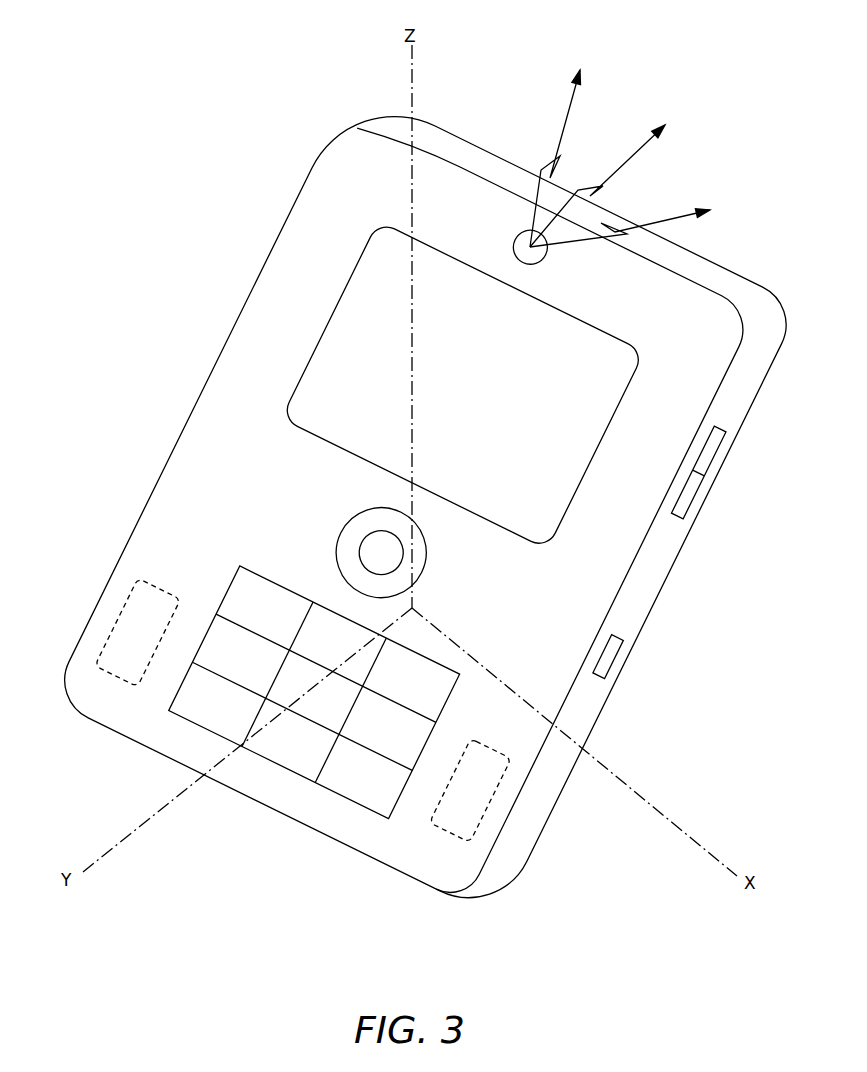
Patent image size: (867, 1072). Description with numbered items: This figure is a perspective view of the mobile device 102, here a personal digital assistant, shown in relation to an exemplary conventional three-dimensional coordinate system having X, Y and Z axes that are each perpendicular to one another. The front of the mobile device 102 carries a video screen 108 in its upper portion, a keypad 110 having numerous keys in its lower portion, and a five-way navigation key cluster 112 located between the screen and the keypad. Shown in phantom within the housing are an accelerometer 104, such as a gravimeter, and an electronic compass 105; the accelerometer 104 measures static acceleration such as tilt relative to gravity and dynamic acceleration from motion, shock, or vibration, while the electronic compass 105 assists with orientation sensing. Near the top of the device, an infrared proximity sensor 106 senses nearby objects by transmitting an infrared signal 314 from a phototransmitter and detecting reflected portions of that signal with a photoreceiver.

The mobile device 102 is at (160, 176).
The accelerometer 104 is at (166, 590).
The electronic compass 105 is at (497, 746).
The infrared proximity sensor 106 is at (539, 259).
The video screen 108 is at (527, 493).
The keypad 110 is at (360, 787).
The navigation key cluster 112 is at (354, 533).
The infrared signal 314 is at (626, 156).